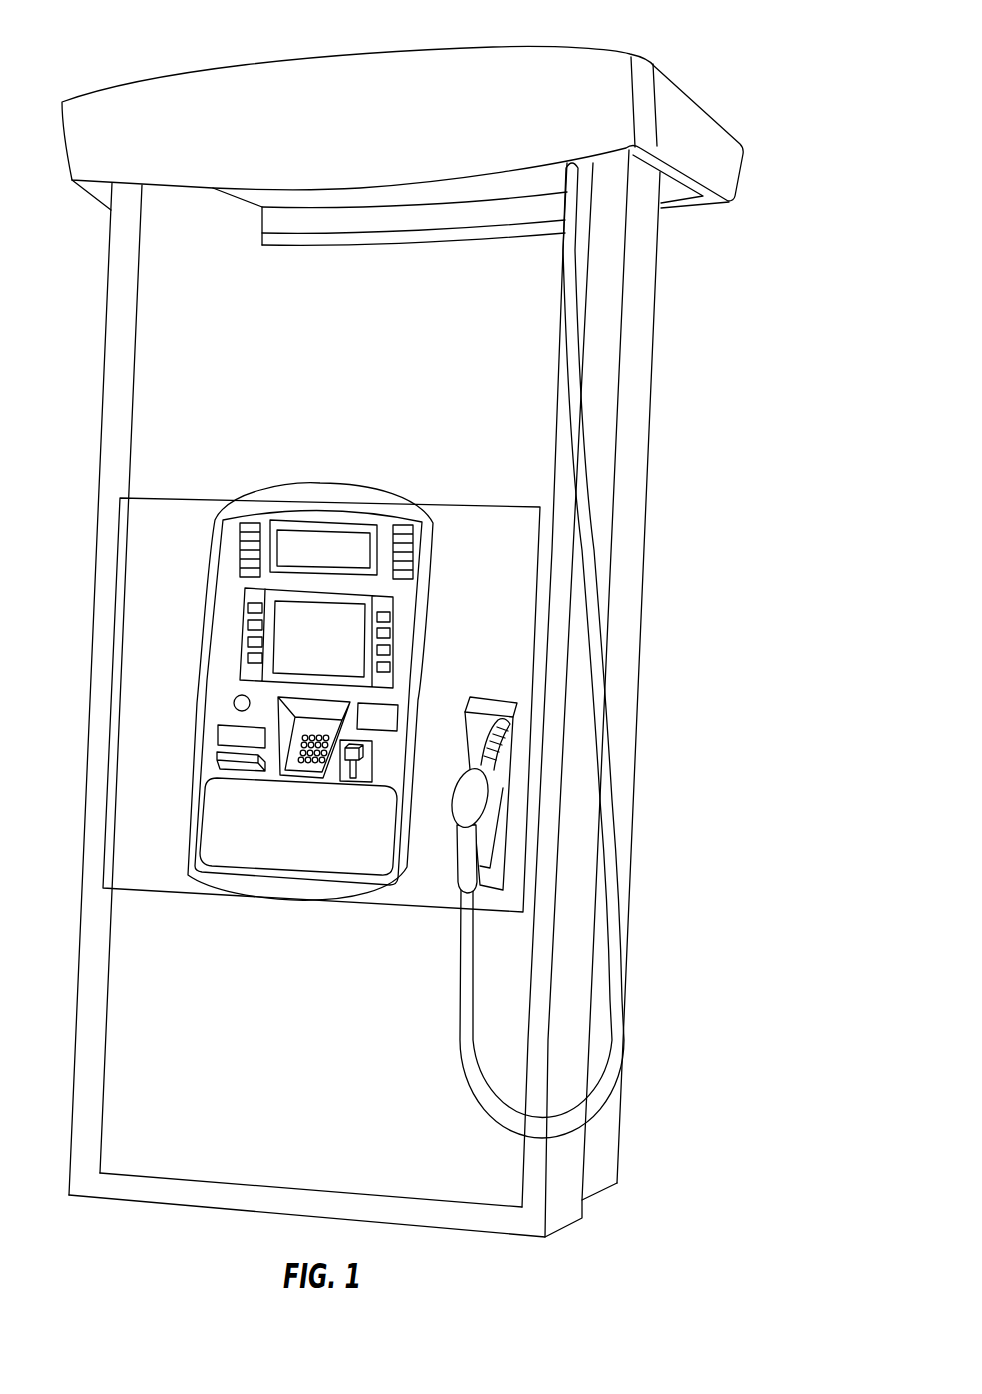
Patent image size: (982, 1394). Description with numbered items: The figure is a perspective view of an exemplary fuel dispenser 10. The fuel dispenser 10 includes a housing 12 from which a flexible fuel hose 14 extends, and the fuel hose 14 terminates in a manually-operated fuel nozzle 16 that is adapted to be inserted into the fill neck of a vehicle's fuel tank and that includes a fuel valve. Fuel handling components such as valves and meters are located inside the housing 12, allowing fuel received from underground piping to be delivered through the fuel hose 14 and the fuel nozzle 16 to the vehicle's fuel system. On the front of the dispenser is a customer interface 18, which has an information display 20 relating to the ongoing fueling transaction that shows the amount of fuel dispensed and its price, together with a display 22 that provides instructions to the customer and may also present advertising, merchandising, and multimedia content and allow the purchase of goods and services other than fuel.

The fuel dispenser 10 is at (744, 124).
The housing 12 is at (646, 527).
The flexible fuel hose 14 is at (601, 685).
The fuel nozzle 16 is at (466, 862).
The customer interface 18 is at (327, 655).
The information display 20 is at (343, 520).
The display 22 is at (360, 615).